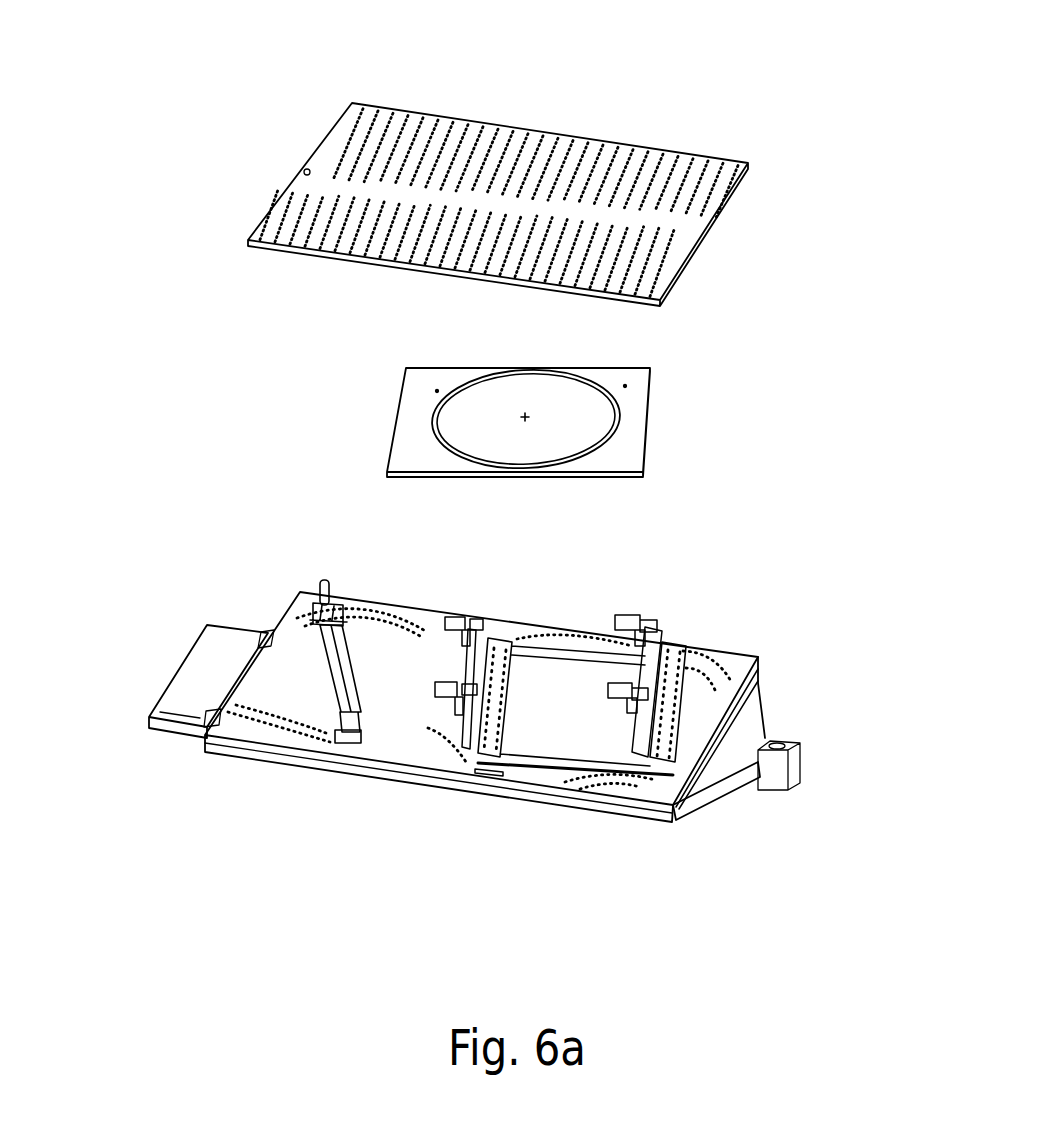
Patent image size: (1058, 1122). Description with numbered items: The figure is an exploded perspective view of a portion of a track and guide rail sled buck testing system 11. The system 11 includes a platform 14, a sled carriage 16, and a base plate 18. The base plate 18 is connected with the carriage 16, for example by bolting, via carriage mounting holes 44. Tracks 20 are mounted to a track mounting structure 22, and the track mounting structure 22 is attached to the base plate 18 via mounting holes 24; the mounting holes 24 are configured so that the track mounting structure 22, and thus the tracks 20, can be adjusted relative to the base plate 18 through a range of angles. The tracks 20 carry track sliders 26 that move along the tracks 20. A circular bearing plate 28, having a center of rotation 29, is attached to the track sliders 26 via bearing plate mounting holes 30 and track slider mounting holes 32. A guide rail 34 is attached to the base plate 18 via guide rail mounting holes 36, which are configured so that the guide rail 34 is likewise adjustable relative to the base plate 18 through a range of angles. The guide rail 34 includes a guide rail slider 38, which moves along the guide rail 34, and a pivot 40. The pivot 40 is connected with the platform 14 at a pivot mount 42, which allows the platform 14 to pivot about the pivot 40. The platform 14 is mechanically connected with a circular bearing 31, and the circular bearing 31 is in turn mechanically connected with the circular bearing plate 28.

The track and guide rail sled buck testing system 11 is at (791, 107).
The platform 14 is at (568, 142).
The pivot mount 42 is at (306, 168).
The circular bearing plate 28 is at (642, 428).
The center of rotation 29 is at (525, 417).
The bearing plate mounting holes 30 is at (624, 387).
The circular bearing 31 is at (570, 456).
The guide rail mounting holes 36 is at (263, 730).
The mounting holes 24 is at (637, 783).
The sled carriage 16 is at (195, 672).
The carriage mounting holes 44 is at (182, 697).
The base plate 18 is at (705, 717).
The track mounting structure 22 is at (660, 742).
The guide rail 34 is at (337, 667).
The guide rail slider 38 is at (338, 600).
The pivot 40 is at (320, 596).
The track slider mounting holes 32 is at (617, 626).
The tracks 20 is at (466, 746).
The track sliders 26 is at (458, 620).